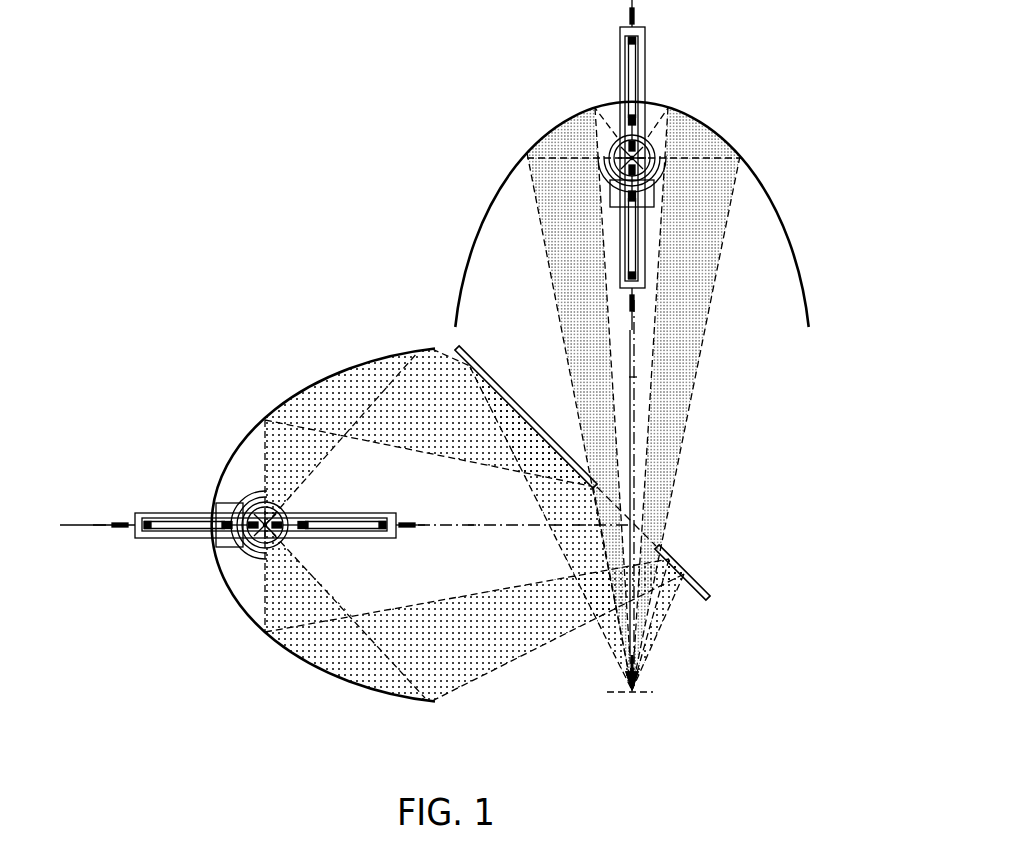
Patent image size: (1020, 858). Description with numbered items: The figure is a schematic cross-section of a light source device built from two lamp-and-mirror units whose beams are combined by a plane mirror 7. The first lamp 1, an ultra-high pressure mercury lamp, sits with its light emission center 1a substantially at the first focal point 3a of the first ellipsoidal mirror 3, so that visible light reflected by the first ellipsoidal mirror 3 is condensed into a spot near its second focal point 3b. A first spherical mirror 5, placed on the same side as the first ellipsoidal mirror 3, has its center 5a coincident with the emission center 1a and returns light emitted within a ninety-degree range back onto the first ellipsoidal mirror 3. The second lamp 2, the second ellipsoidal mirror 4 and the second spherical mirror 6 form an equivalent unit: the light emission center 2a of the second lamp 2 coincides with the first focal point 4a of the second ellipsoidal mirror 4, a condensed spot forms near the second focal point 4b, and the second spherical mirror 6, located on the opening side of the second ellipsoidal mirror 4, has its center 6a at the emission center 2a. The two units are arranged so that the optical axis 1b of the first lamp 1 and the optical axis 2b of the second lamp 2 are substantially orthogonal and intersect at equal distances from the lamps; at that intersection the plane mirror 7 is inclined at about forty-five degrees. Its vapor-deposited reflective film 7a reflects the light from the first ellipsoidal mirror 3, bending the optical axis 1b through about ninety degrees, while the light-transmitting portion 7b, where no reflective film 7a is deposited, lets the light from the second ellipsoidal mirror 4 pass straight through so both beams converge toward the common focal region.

The first lamp 1 is at (153, 513).
The second lamp 2 is at (646, 42).
The first ellipsoidal mirror 3 is at (347, 369).
The second ellipsoidal mirror 4 is at (555, 128).
The first spherical mirror 5 is at (250, 556).
The second spherical mirror 6 is at (658, 182).
The plane mirror 7 is at (697, 583).
The reflective film 7a is at (462, 345).
The light-transmitting portion 7b is at (655, 521).
The light emission center 1a is at (252, 493).
The first focal point 3a is at (194, 473).
The center 5a is at (194, 473).
The light emission center 2a is at (650, 143).
The first focal point 4a is at (711, 114).
The center 6a is at (711, 114).
The optical axis 1b is at (472, 527).
The optical axis 2b is at (634, 377).
The second focal point 3b is at (632, 702).
The second focal point 4b is at (631, 716).